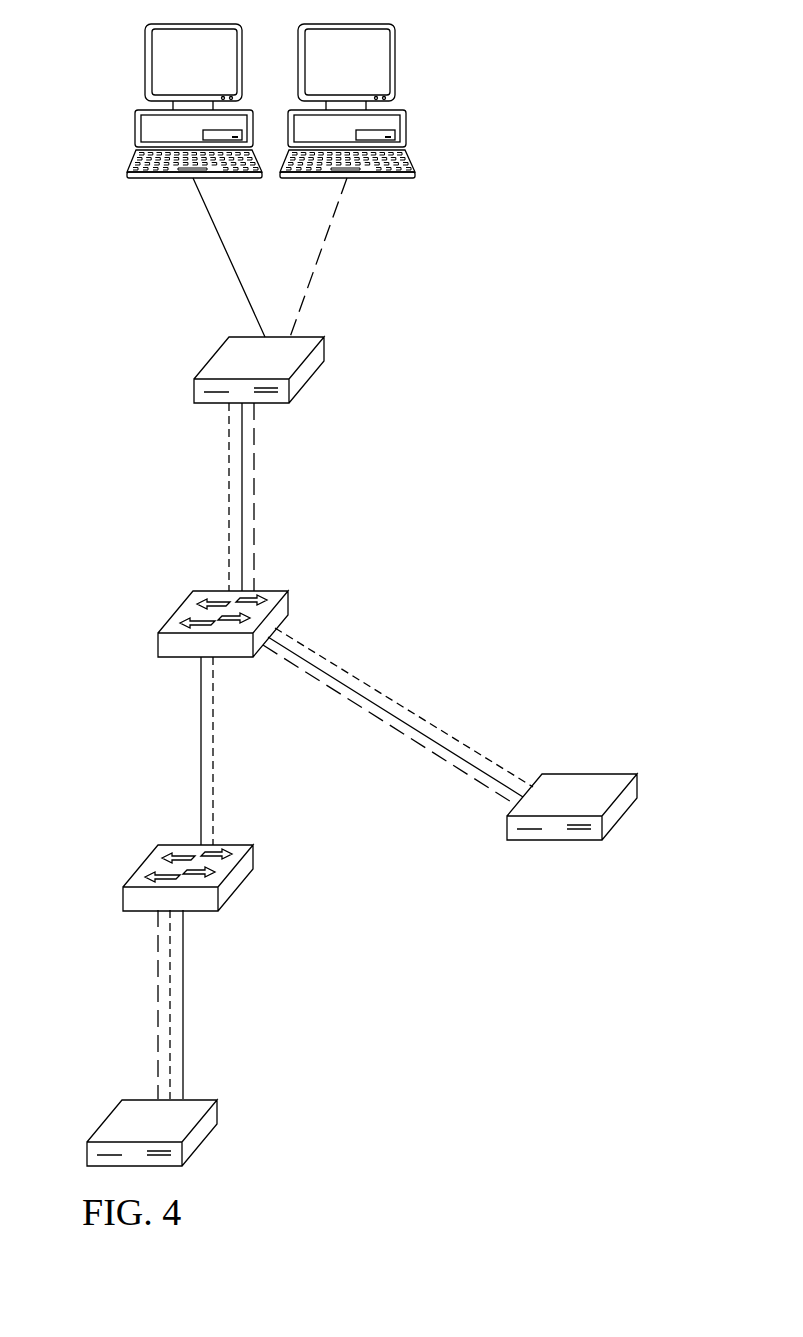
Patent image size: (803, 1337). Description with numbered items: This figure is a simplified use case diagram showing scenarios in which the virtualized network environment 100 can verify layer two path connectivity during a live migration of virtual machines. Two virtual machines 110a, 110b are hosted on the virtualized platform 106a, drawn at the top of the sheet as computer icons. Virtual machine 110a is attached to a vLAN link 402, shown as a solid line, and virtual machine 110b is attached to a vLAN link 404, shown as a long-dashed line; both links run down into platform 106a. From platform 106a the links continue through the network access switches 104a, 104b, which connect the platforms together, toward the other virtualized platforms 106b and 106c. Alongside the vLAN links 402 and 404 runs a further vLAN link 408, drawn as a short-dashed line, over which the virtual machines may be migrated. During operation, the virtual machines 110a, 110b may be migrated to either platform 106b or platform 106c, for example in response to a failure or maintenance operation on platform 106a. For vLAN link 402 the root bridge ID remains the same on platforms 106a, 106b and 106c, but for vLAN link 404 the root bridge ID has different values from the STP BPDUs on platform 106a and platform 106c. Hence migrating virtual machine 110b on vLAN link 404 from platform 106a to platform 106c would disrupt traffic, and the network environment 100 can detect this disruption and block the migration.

The virtualized network environment 100 is at (602, 131).
The virtual machine 110a is at (135, 128).
The virtual machine 110b is at (405, 128).
The virtualized platform 106a is at (212, 356).
The virtualized platform 106b is at (620, 820).
The virtualized platform 106c is at (198, 1145).
The network access switch 104a is at (175, 612).
The network access switch 104b is at (140, 862).
The vLAN link 402 is at (228, 258).
The vLAN link 404 is at (320, 258).
The vLAN link 408 is at (228, 503).